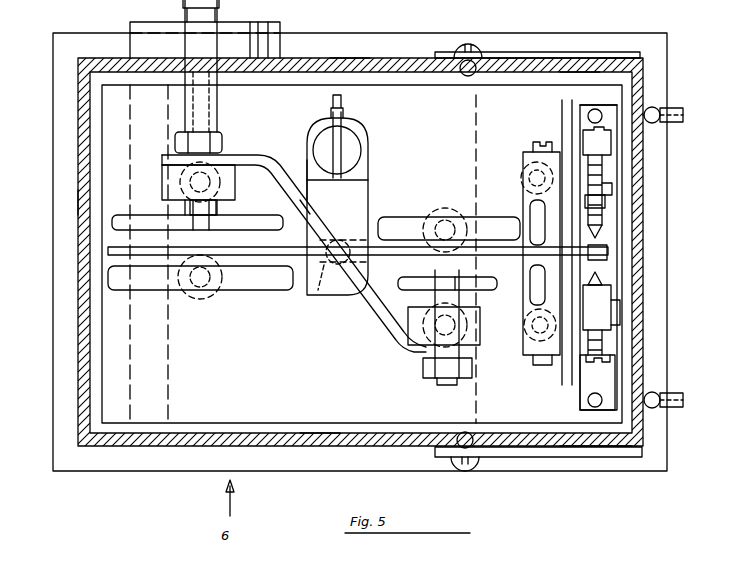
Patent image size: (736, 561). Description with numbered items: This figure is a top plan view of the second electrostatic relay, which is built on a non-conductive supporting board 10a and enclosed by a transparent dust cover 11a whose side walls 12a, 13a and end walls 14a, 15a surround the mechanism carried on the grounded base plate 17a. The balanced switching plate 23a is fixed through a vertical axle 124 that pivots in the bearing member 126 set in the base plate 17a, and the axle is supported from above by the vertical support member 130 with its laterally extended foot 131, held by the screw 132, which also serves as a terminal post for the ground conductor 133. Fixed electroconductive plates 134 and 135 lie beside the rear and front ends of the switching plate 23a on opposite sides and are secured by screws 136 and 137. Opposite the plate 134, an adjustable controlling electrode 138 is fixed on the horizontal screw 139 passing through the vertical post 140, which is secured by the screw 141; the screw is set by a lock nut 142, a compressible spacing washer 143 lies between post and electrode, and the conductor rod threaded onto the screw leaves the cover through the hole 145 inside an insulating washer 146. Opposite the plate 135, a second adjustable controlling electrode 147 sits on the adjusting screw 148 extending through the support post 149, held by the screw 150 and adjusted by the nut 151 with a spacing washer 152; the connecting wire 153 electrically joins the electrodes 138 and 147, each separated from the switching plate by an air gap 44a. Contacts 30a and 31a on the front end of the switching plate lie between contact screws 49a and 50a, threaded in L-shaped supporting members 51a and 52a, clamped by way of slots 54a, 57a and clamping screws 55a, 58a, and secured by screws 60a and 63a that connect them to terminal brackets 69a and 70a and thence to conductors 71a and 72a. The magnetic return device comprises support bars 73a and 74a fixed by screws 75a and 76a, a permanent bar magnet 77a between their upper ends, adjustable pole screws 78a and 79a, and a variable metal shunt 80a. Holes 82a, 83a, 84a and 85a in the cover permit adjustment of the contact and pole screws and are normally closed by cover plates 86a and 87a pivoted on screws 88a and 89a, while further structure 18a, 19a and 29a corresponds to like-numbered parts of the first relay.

The supporting board 10a is at (57, 288).
The dust cover 11a is at (78, 262).
The side wall 12a is at (312, 445).
The side wall 13a is at (346, 60).
The end wall 14a is at (84, 204).
The end wall 15a is at (620, 232).
The base plate 17a is at (106, 160).
The support 18a is at (162, 352).
The guide line 19a is at (476, 100).
The switching plate 23a is at (270, 250).
The coupling block 29a is at (604, 258).
The contact 30a is at (606, 246).
The contact 31a is at (604, 279).
The air gap 44a is at (222, 232).
The contact screw 49a is at (606, 142).
The contact screw 50a is at (614, 376).
The L-shaped supporting member 51a is at (580, 98).
The L-shaped supporting member 52a is at (580, 393).
The vertical slot 54a is at (604, 188).
The clamping screw 55a is at (606, 202).
The vertical slot 57a is at (614, 305).
The clamping screw 58a is at (620, 320).
The screw 60a is at (588, 402).
The screw 63a is at (588, 116).
The conductor terminal bracket 69a is at (660, 396).
The conductor terminal bracket 70a is at (658, 108).
The conductor 71a is at (680, 400).
The conductor 72a is at (678, 108).
The magnet support bar 73a is at (524, 184).
The magnet support bar 74a is at (526, 358).
The screw 75a is at (524, 178).
The screw 76a is at (524, 342).
The permanent bar magnet 77a is at (526, 216).
The adjustable screw pole 78a is at (534, 146).
The adjustable screw pole 79a is at (526, 370).
The magnetic variable metal shunt 80a is at (580, 146).
The hole 82a is at (608, 62).
The hole 83a is at (606, 457).
The hole 84a is at (540, 54).
The hole 85a is at (536, 458).
The cover plate 86a is at (566, 62).
The cover plate 87a is at (578, 458).
The screw 88a is at (472, 44).
The screw 89a is at (470, 466).
The axle 124 is at (340, 240).
The bearing member 126 is at (322, 292).
The vertical support member 130 is at (360, 193).
The foot 131 is at (364, 162).
The screw 132 is at (352, 140).
The ground conductor 133 is at (346, 104).
The fixed plate 134 is at (293, 286).
The fixed plate 135 is at (400, 222).
The screw 136 is at (202, 302).
The screw 137 is at (448, 214).
The adjustable controlling electrode 138 is at (134, 222).
The horizontal screw 139 is at (214, 106).
The vertical post 140 is at (163, 182).
The screw 141 is at (164, 168).
The lock nut 142 is at (222, 142).
The compressible spacing washer 143 is at (190, 208).
The hole 145 is at (236, 58).
The insulating washer 146 is at (230, 30).
The second adjustable controlling electrode 147 is at (460, 284).
The adjusting screw 148 is at (440, 382).
The support post 149 is at (480, 330).
The screw 150 is at (470, 320).
The nut 151 is at (424, 366).
The compressible spacing washer 152 is at (430, 300).
The connecting wire 153 is at (378, 318).